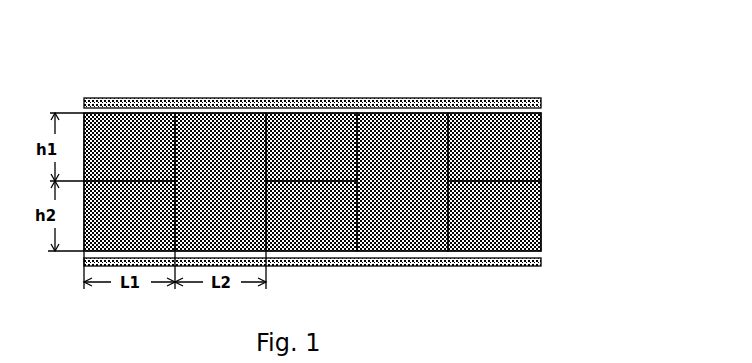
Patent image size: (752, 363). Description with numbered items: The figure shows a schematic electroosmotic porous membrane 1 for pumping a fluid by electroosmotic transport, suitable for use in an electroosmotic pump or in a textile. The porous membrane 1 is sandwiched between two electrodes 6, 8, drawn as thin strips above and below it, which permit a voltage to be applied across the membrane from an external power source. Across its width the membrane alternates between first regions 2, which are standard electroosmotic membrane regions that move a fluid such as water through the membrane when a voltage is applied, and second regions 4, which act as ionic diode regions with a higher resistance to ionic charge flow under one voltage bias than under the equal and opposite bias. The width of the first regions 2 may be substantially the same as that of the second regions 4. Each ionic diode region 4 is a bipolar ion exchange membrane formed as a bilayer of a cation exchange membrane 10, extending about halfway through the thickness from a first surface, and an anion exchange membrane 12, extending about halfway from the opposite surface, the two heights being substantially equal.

The electroosmotic porous membrane 1 is at (354, 173).
The first regions 2 is at (247, 231).
The second regions 4 is at (333, 200).
The electrode 6 is at (460, 90).
The electrode 8 is at (469, 256).
The cation exchange membrane 10 is at (327, 117).
The anion exchange membrane 12 is at (323, 234).